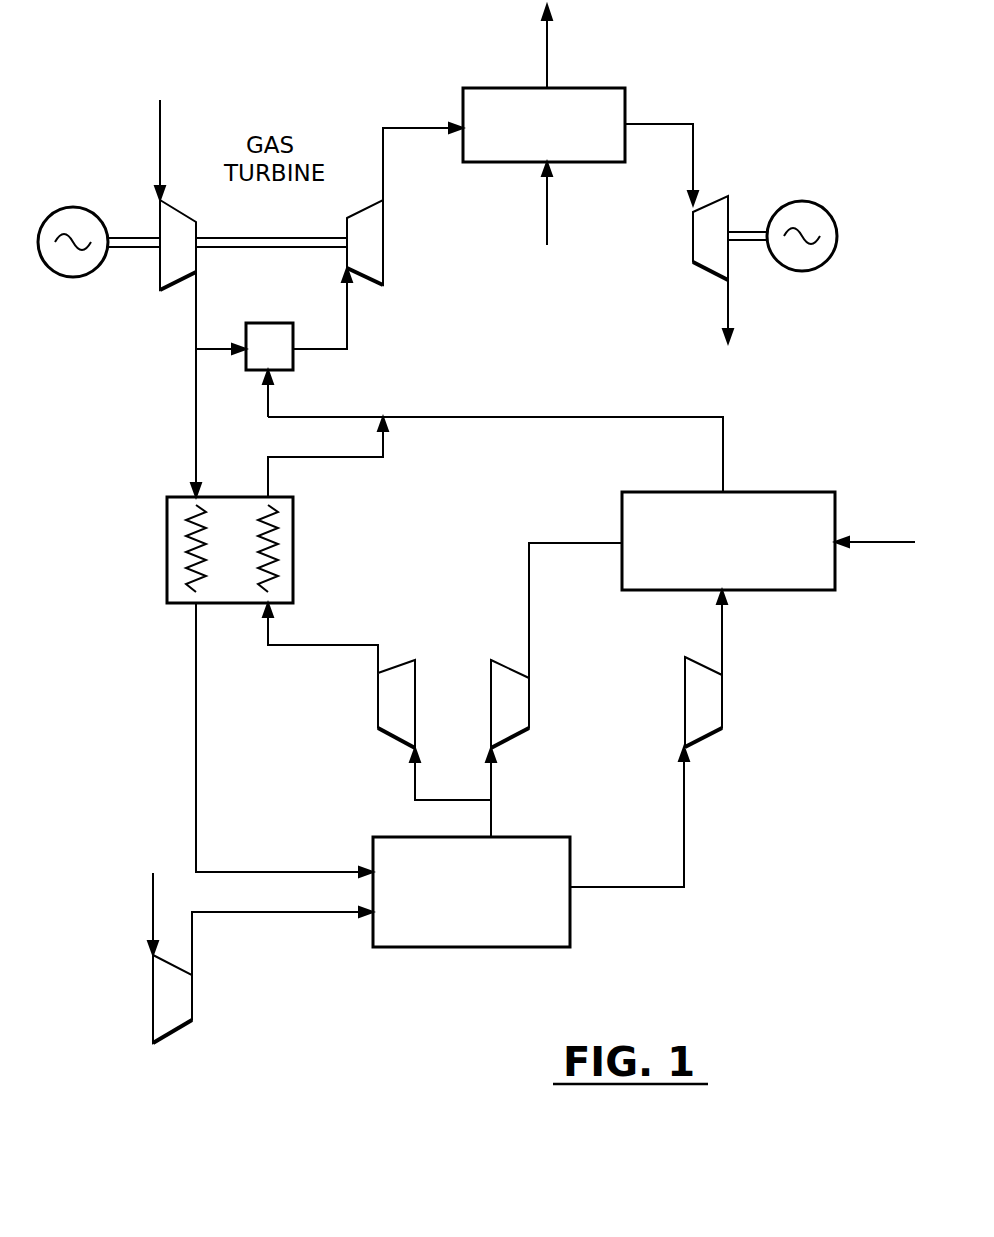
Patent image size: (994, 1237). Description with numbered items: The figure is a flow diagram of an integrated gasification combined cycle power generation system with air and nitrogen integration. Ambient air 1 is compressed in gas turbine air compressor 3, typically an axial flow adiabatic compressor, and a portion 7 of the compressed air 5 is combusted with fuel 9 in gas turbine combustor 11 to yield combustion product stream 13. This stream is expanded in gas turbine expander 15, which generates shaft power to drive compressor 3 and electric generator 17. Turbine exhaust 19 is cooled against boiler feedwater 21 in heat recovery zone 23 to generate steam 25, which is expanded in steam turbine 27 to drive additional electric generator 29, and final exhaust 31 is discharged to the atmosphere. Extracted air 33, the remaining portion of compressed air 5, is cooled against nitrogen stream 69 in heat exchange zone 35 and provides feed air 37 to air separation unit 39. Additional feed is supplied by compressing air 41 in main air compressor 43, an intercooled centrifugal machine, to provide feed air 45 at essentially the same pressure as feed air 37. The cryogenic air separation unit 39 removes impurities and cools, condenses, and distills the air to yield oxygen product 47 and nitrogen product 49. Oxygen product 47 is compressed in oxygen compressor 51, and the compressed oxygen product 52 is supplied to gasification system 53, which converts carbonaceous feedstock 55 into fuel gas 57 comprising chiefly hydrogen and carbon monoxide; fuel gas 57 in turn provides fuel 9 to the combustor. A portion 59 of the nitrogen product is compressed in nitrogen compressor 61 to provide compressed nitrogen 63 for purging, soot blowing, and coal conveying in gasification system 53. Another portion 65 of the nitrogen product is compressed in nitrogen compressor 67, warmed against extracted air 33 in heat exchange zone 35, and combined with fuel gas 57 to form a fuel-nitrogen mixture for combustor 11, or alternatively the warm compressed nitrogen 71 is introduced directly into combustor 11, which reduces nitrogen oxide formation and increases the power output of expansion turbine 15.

The ambient air 1 is at (160, 150).
The gas turbine air compressor 3 is at (160, 270).
The compressed air 5 is at (196, 322).
The portion of compressed air 7 is at (215, 349).
The fuel 9 is at (268, 405).
The gas turbine combustor 11 is at (264, 323).
The combustion product stream 13 is at (347, 323).
The gas turbine expander 15 is at (383, 258).
The electric generator 17 is at (78, 207).
The turbine exhaust 19 is at (383, 180).
The boiler feedwater 21 is at (547, 198).
The heat recovery zone 23 is at (463, 100).
The steam 25 is at (660, 124).
The steam turbine 27 is at (693, 240).
The additional electric generator 29 is at (802, 200).
The final exhaust 31 is at (547, 50).
The extracted air 33 is at (196, 405).
The heat exchange zone 35 is at (167, 538).
The feed air 37 is at (196, 735).
The air separation unit 39 is at (487, 947).
The air 41 is at (153, 890).
The main air compressor 43 is at (178, 1035).
The feed air 45 is at (280, 912).
The oxygen product 47 is at (630, 887).
The nitrogen product 49 is at (491, 818).
The oxygen compressor 51 is at (722, 700).
The compressed oxygen product 52 is at (722, 640).
The gasification system 53 is at (652, 492).
The carbonaceous feedstock 55 is at (870, 542).
The fuel gas 57 is at (565, 417).
The portion of nitrogen product 59 is at (491, 783).
The nitrogen compressor 61 is at (529, 700).
The compressed nitrogen 63 is at (529, 600).
The another portion of nitrogen product 65 is at (415, 783).
The nitrogen compressor 67 is at (378, 712).
The nitrogen stream 69 is at (330, 645).
The warm compressed nitrogen 71 is at (335, 457).